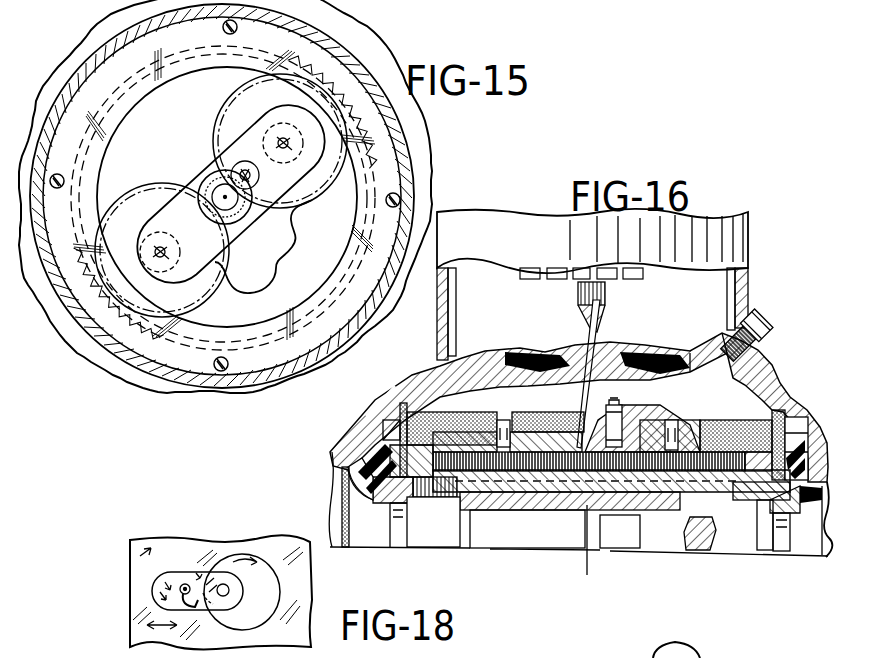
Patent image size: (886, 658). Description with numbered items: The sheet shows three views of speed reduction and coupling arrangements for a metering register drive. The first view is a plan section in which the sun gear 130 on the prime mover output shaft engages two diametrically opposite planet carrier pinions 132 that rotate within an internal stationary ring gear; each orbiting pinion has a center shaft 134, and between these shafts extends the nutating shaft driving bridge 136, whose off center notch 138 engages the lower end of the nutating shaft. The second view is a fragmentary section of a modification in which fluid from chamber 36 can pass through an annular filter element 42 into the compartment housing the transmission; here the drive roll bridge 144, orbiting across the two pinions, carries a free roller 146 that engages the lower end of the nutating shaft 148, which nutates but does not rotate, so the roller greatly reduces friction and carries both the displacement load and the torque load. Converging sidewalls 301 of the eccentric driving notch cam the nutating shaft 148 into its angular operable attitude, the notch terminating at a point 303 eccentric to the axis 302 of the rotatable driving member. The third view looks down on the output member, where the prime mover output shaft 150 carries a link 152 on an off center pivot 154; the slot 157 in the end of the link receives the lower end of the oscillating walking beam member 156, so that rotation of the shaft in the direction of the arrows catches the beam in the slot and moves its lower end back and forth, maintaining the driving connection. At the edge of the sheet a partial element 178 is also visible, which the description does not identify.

In FIG. 15, the sun gear 130 is at (230, 194).
In FIG. 15, the planet carrier pinions 132 is at (292, 246).
In FIG. 15, the center shaft 134 is at (288, 139).
In FIG. 15, the nutating shaft driving bridge 136 is at (206, 168).
In FIG. 15, the off center notch 138 is at (199, 192).
In FIG. 16, the chamber 36 is at (392, 430).
In FIG. 16, the annular filter element 42 is at (405, 407).
In FIG. 16, the drive roll bridge 144 is at (646, 420).
In FIG. 16, the free roller 146 is at (752, 437).
In FIG. 16, the nutating shaft 148 is at (574, 413).
In FIG. 16, the converging sidewalls 301 is at (601, 406).
In FIG. 16, the axis 302 is at (578, 492).
In FIG. 16, the point 303 is at (504, 416).
In FIG. 18, the prime mover output shaft 150 is at (260, 568).
In FIG. 18, the link 152 is at (223, 577).
In FIG. 18, the off center pivot 154 is at (229, 590).
In FIG. 18, the oscillating walking beam member 156 is at (213, 608).
In FIG. 18, the slot 157 is at (178, 593).
In FIG. 18, the ring 178 is at (655, 650).